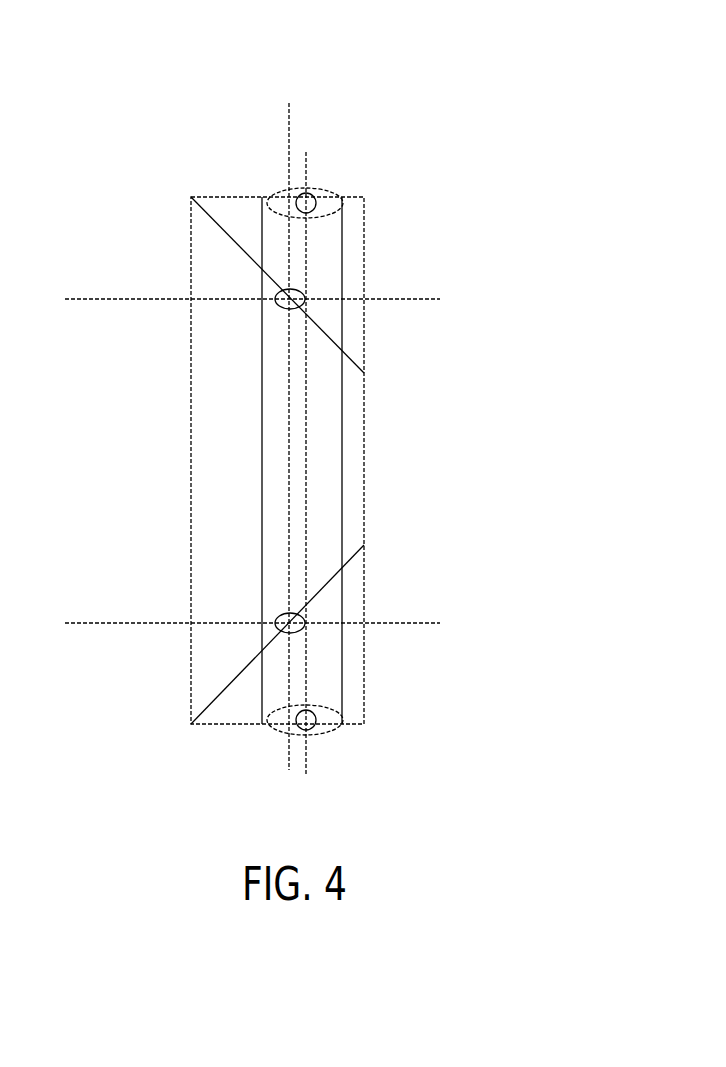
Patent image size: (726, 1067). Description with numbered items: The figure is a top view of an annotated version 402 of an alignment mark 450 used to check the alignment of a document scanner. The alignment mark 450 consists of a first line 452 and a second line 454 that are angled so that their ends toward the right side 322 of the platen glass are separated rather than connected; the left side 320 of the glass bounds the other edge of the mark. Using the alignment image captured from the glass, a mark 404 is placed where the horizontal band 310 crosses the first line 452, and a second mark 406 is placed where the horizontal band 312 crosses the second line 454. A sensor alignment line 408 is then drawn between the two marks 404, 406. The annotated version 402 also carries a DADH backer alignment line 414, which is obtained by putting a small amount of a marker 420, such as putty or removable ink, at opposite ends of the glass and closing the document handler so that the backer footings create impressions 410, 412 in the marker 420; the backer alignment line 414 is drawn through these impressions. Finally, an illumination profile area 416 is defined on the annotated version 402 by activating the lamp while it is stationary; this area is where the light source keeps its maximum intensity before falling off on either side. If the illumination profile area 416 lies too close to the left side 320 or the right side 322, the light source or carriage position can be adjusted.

The annotated version 402 is at (407, 90).
The alignment mark 450 is at (217, 197).
The first line 452 is at (227, 234).
The second line 454 is at (212, 722).
The mark 404 is at (278, 300).
The second mark 406 is at (278, 622).
The left side 320 is at (191, 463).
The right side 322 is at (364, 415).
The horizontal band 310 is at (407, 299).
The horizontal band 312 is at (407, 624).
The impression 410 is at (312, 205).
The impression 412 is at (318, 722).
The marker 420 is at (325, 198).
The DADH backer alignment line 414 is at (302, 422).
The sensor alignment line 408 is at (280, 448).
The illumination profile area 416 is at (328, 510).